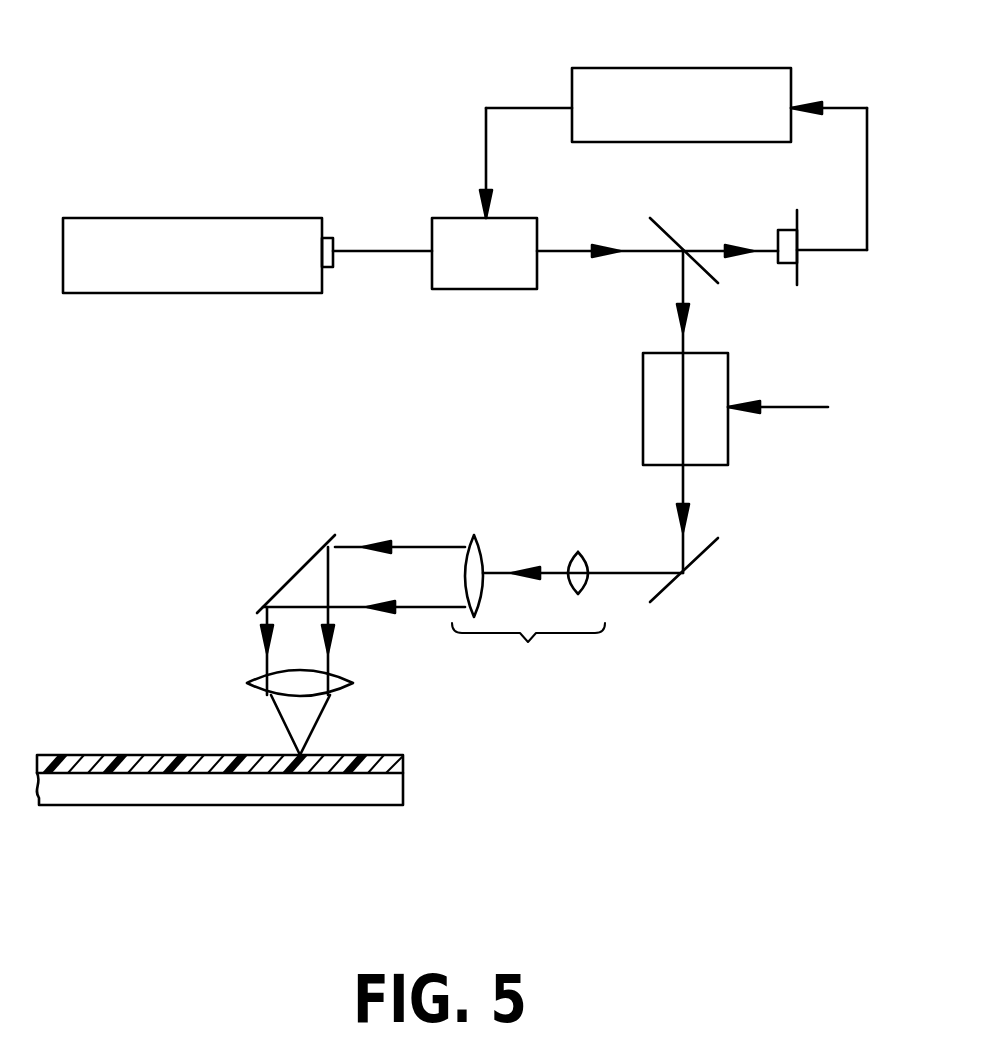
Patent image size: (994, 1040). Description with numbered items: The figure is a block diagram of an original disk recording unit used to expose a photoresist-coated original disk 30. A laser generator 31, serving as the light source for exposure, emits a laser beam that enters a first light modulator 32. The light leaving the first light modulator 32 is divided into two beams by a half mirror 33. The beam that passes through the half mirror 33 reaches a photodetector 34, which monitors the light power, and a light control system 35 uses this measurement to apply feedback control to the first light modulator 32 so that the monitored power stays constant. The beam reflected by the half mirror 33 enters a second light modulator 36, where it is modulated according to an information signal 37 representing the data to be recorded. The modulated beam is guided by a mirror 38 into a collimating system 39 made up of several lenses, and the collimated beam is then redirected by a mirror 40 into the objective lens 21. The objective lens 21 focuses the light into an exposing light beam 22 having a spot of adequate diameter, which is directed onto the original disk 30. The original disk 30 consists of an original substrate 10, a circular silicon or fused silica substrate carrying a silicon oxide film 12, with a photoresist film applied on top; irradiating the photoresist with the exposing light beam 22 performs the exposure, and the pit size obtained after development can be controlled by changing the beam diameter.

The original substrate 10 is at (403, 790).
The silicon oxide film 12 is at (403, 763).
The objective lens 21 is at (350, 672).
The exposing light beam 22 is at (282, 720).
The original disk 30 is at (124, 730).
The laser generator 31 is at (251, 218).
The first light modulator 32 is at (470, 289).
The half mirror 33 is at (660, 226).
The photodetector 34 is at (797, 230).
The light control system 35 is at (710, 68).
The second light modulator 36 is at (643, 398).
The information signal 37 is at (803, 407).
The mirror 38 is at (677, 582).
The collimating system 39 is at (528, 610).
The mirror 40 is at (296, 572).